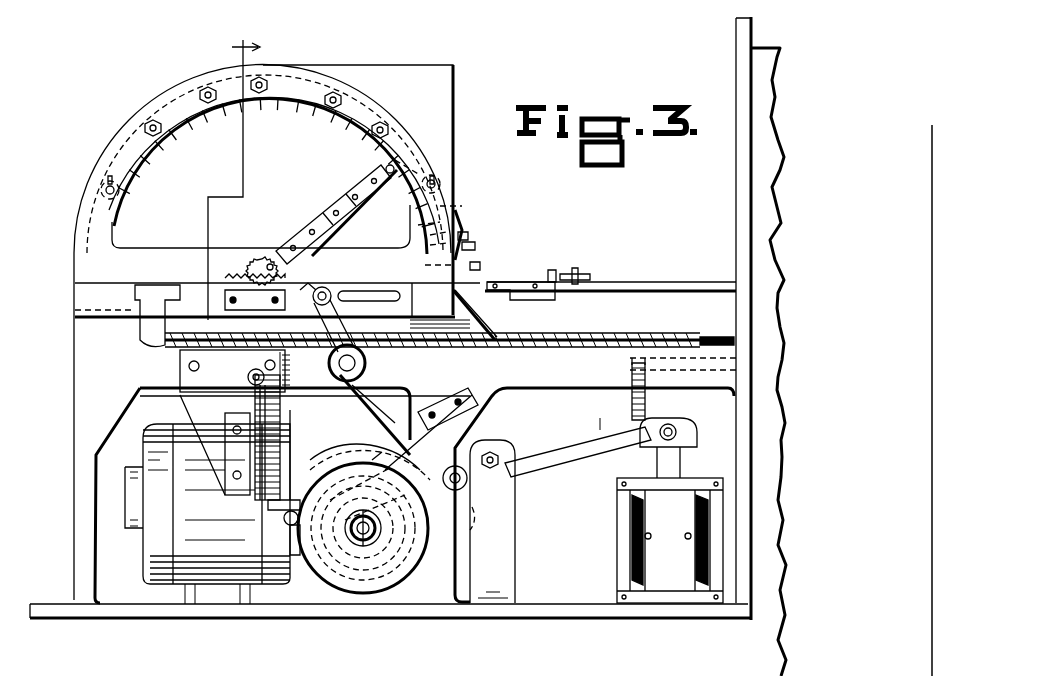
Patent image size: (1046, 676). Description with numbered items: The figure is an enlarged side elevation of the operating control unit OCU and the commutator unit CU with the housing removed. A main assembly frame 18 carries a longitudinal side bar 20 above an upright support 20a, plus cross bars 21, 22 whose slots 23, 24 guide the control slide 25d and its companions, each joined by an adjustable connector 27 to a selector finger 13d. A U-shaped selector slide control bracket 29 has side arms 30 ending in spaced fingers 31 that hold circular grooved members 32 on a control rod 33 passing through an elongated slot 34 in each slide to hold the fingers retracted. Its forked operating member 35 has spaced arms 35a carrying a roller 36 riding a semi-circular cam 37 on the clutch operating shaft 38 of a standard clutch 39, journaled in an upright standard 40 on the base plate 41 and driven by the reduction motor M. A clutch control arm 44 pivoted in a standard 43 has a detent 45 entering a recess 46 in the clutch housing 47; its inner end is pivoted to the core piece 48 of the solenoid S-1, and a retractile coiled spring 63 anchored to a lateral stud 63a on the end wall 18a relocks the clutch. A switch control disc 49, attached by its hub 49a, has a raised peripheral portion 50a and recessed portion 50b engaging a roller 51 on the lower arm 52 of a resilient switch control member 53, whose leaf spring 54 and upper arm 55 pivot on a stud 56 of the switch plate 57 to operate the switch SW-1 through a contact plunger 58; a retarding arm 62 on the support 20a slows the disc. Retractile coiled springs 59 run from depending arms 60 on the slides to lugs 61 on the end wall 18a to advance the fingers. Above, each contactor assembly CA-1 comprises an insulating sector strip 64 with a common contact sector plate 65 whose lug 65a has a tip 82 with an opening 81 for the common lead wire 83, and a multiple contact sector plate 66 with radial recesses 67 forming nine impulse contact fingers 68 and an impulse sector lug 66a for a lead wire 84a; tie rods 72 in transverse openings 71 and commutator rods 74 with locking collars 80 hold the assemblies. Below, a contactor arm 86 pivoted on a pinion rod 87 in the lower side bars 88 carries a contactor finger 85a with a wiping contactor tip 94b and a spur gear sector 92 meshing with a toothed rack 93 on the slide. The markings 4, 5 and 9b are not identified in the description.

The section line 4 is at (534, 400).
The section line 5 is at (283, 500).
The panel 9b is at (699, 675).
The weight value selector finger 13d is at (643, 283).
The main assembly frame 18 is at (90, 400).
The end wall of the main frame 18a is at (742, 168).
The longitudinal side bar 20 is at (566, 389).
The upright frame support 20a is at (478, 424).
The cross bar 21 is at (430, 290).
The cross bar 22 is at (108, 313).
The transverse slot 23 is at (428, 312).
The transverse slot 24 is at (90, 315).
The operating control slide 25d is at (512, 302).
The adjustable connector 27 is at (516, 282).
The selector slide control bracket 29 is at (366, 362).
The side arm 30 is at (344, 318).
The spaced finger 31 is at (306, 283).
The circular grooved member 32 is at (336, 305).
The control rod 33 is at (328, 292).
The elongated slot 34 is at (366, 296).
The forked operating member 35 is at (372, 380).
The spaced arm 35a is at (365, 390).
The roller 36 is at (466, 488).
The semi-circular cam 37 is at (450, 494).
The clutch operating shaft 38 is at (373, 532).
The standard clutch 39 is at (366, 580).
The upright standard 40 is at (394, 580).
The base plate 41 is at (550, 604).
The standard 43 is at (505, 494).
The clutch control arm 44 is at (578, 447).
The detent 45 is at (378, 489).
The recess 46 is at (340, 495).
The clutch housing 47 is at (340, 548).
The core piece 48 is at (688, 464).
The switch control disc 49 is at (360, 548).
The hub 49a is at (345, 546).
The raised peripheral portion 50a is at (343, 458).
The recessed peripheral portion 50b is at (390, 575).
The roller 51 is at (300, 553).
The lower arm 52 is at (287, 512).
The resilient switch control member 53 is at (268, 505).
The leaf spring 54 is at (282, 440).
The upper arm 55 is at (258, 405).
The stud 56 is at (250, 374).
The switch plate 57 is at (186, 372).
The contact plunger 58 is at (240, 438).
The retractile coiled spring 59 is at (642, 332).
The depending arm 60 is at (155, 325).
The lug 61 is at (714, 334).
The retarding arm 62 is at (380, 455).
The retractile coiled spring 63 is at (630, 402).
The lateral stud 63a is at (683, 372).
The insulating sector strip 64 is at (477, 240).
The common contact sector plate 65 is at (128, 200).
The contact sector lug 65a is at (460, 258).
The multiple contact sector plate 66 is at (440, 210).
The impulse sector lug 66a is at (463, 225).
The radial recess 67 is at (312, 114).
The impulse contact finger 68 is at (222, 118).
The transverse opening 71 is at (208, 92).
The contactor assembly tie rod 72 is at (203, 122).
The commutator rod 74 is at (106, 192).
The locking collar 80 is at (108, 180).
The opening 81 is at (478, 246).
The tip 82 is at (545, 217).
The common lead wire 83 is at (540, 258).
The lead wire 84a is at (470, 215).
The circuit closer contactor finger 85a is at (386, 172).
The contactor arm 86 is at (320, 234).
The pinion rod 87 is at (269, 263).
The lower side bar 88 is at (174, 262).
The spur gear sector 92 is at (262, 262).
The toothed rack 93 is at (240, 274).
The wiping contactor tip 94b is at (383, 166).
The commutator unit CU is at (377, 96).
The contactor assembly CA-1 is at (375, 148).
The operating control unit OCU is at (556, 306).
The solenoid S-1 is at (617, 522).
The sensitive electric switch SW-1 is at (235, 455).
The reduction motor M is at (147, 582).